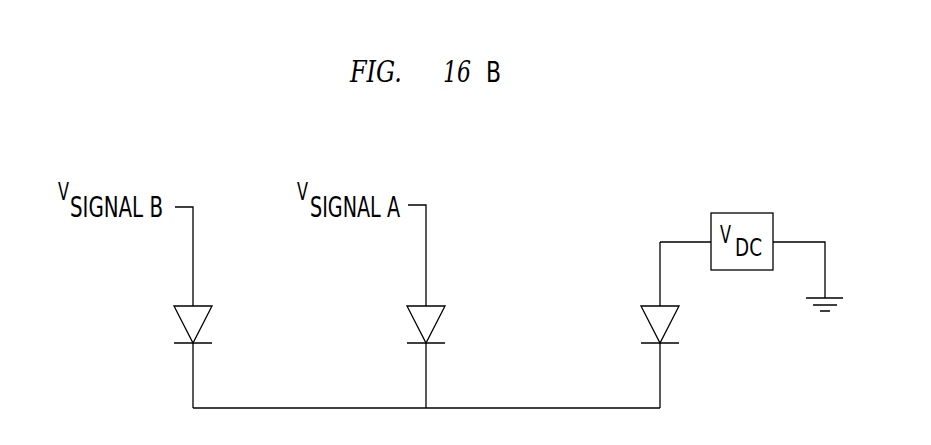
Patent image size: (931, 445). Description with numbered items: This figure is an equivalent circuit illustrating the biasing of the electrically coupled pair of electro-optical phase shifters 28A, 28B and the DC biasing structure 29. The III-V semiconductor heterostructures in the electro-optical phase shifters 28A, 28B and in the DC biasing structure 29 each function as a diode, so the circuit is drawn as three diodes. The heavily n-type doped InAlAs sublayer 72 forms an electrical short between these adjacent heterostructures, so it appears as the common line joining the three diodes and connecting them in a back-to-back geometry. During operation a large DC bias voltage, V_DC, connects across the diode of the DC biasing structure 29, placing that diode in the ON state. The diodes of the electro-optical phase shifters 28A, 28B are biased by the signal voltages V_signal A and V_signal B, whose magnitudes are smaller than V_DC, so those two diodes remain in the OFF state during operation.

The electro-optical phase shifter 28A is at (473, 291).
The electro-optical phase shifter 28B is at (235, 291).
The DC biasing structure 29 is at (700, 360).
The heavily n-type doped InAlAs sublayer 72 is at (563, 408).